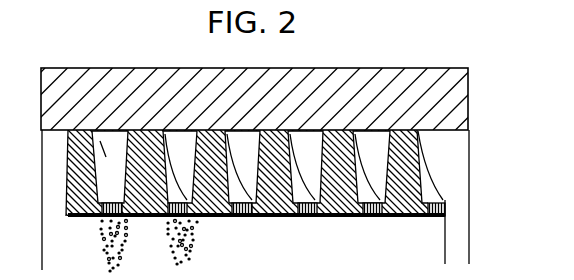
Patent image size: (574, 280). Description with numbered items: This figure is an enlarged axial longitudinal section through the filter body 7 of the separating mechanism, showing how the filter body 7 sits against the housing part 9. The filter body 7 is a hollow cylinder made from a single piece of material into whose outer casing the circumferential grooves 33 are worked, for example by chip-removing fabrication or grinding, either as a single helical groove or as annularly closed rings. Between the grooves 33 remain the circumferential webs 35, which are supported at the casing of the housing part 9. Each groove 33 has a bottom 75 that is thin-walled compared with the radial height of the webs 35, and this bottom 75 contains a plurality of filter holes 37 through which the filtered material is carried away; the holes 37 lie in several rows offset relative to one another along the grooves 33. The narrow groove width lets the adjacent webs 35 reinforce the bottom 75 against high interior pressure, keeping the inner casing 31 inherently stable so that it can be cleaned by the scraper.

The filter body 7 is at (390, 231).
The housing part 9 is at (377, 83).
The inner casing 31 is at (269, 219).
The circumferential grooves 33 is at (380, 168).
The circumferential webs 35 is at (414, 146).
The filter holes 37 is at (97, 221).
The bottom 75 is at (115, 203).